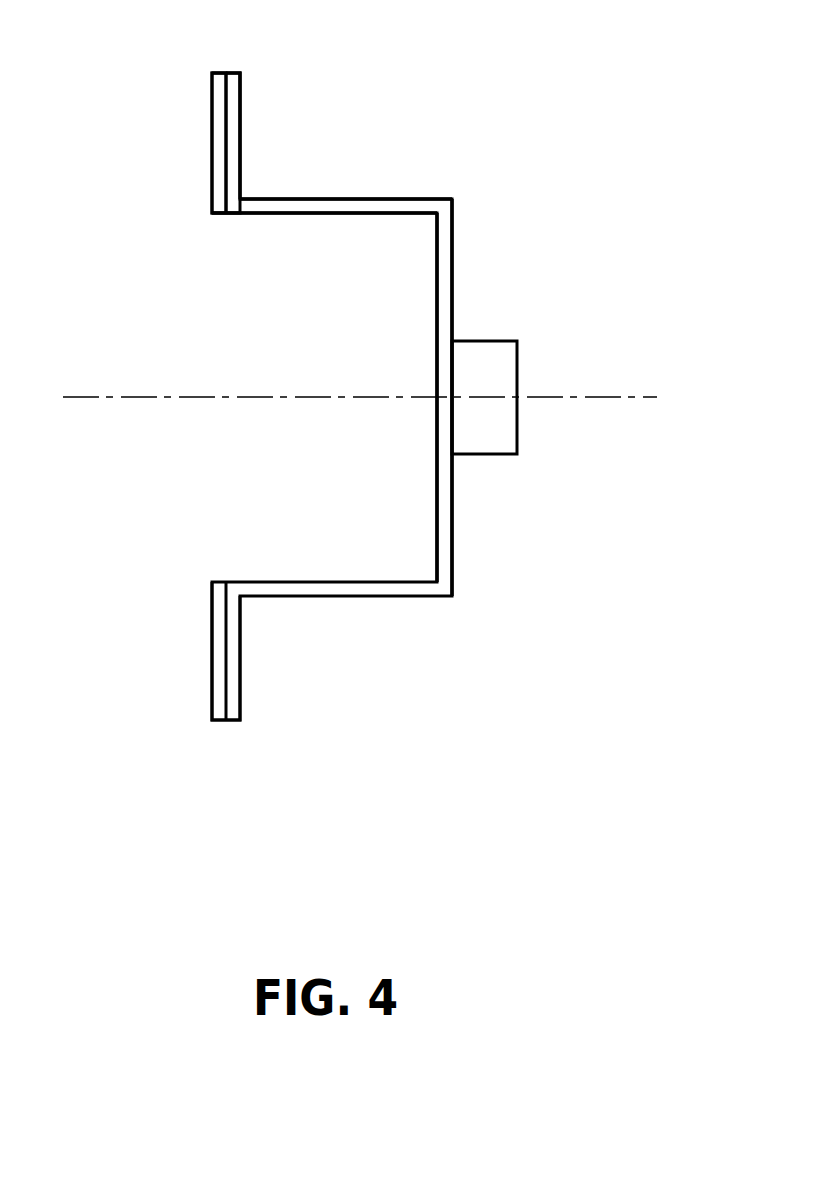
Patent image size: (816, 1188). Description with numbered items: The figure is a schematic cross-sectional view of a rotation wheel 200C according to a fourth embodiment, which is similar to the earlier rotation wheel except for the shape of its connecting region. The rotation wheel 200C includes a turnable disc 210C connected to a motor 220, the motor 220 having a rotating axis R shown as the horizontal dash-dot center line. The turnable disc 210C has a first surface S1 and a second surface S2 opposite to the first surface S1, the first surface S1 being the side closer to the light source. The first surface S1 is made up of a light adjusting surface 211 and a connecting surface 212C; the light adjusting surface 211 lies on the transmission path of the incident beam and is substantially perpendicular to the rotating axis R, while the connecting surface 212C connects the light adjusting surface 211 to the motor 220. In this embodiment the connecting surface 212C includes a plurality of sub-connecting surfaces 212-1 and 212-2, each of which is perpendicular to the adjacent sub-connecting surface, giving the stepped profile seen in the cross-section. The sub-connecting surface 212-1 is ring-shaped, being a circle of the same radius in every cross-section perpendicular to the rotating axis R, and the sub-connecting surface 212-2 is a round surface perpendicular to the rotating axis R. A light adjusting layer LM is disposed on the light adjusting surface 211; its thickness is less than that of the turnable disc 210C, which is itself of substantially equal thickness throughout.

The turnable disc 210C is at (409, 74).
The light adjusting surface 211 is at (228, 158).
The first surface S1 is at (226, 100).
The second surface S2 is at (241, 100).
The sub-connecting surface 212-1 is at (377, 212).
The sub-connecting surface 212-2 is at (438, 273).
The connecting surface 212C is at (564, 155).
The motor 220 is at (500, 370).
The rotating axis R is at (121, 397).
The light adjusting layer LM is at (219, 688).
The rotation wheel 200C is at (709, 887).